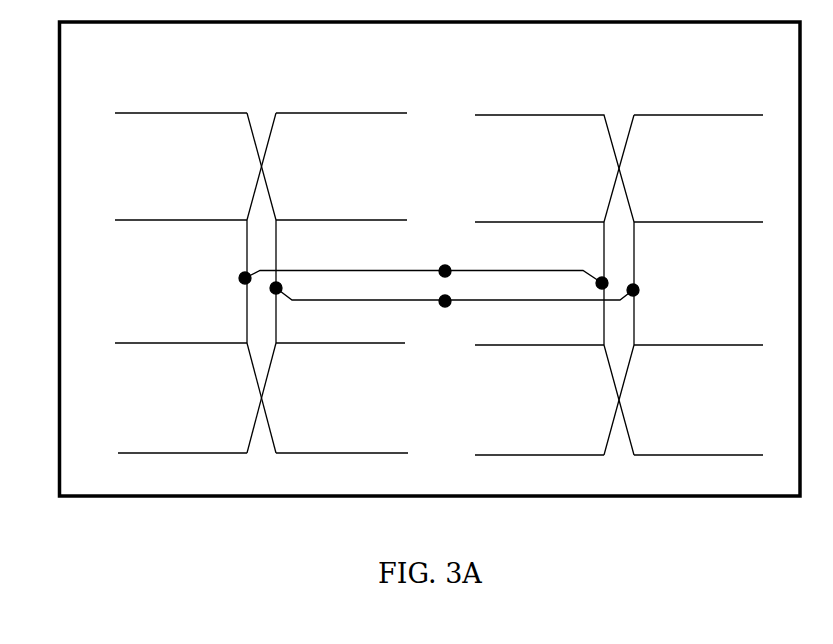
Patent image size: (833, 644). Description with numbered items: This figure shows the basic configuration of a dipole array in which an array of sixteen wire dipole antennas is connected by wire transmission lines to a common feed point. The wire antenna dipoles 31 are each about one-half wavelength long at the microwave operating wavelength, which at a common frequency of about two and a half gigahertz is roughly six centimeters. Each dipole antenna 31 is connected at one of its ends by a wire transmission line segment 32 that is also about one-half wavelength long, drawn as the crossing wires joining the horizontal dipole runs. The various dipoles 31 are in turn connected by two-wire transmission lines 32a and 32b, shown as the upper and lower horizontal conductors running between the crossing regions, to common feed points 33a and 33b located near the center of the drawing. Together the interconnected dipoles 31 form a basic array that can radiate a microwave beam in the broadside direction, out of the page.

The wire antenna dipole 31 is at (162, 111).
The wire transmission line segment 32 is at (270, 145).
The two-wire transmission line 32a is at (327, 268).
The two-wire transmission line 32b is at (333, 302).
The common feed point 33a is at (445, 265).
The common feed point 33b is at (445, 308).